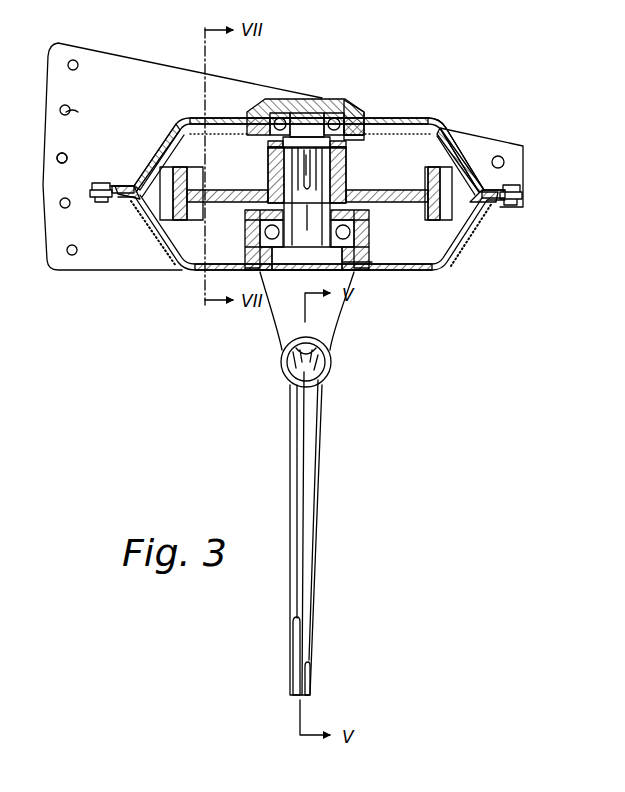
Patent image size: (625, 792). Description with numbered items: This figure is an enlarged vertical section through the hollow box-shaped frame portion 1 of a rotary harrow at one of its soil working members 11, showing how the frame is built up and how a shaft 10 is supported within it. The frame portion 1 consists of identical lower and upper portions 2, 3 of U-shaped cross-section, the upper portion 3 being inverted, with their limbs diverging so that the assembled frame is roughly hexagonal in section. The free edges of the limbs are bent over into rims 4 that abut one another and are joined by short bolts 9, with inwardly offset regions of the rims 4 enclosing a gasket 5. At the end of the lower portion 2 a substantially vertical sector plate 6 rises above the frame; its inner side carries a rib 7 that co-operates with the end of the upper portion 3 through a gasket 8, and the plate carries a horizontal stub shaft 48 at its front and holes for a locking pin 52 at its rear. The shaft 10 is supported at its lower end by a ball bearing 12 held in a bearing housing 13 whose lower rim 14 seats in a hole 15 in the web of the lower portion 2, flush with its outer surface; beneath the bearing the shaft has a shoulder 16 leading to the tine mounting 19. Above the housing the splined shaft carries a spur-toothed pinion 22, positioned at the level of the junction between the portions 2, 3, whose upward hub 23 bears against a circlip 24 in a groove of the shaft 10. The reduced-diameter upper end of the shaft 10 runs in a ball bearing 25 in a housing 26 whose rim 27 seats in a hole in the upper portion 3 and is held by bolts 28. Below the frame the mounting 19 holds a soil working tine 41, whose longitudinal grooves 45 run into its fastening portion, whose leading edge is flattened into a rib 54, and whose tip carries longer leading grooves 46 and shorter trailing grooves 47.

The hollow box-shaped frame portion 1 is at (433, 118).
The lower portion 2 is at (430, 275).
The upper portion 3 is at (178, 124).
The rims 4 is at (118, 185).
The gasket 5 is at (128, 205).
The sector plates 6 is at (135, 62).
The rib 7 is at (450, 140).
The gasket 8 is at (446, 126).
The short bolts 9 is at (100, 182).
The shaft 10 is at (302, 110).
The soil working member 11 is at (326, 378).
The ball bearing 12 is at (364, 236).
The bearing housing 13 is at (248, 232).
The lower rim 14 is at (357, 272).
The hole 15 is at (345, 275).
The shoulder 16 is at (365, 262).
The tine mounting 19 is at (278, 326).
The pinion 22 is at (396, 178).
The hub 23 is at (270, 145).
The circlip 24 is at (272, 152).
The ball bearing 25 is at (348, 101).
The housing 26 is at (310, 98).
The rim 27 is at (362, 138).
The bolts 28 is at (250, 110).
The soil working tine 41 is at (288, 468).
The grooves 45 is at (300, 360).
The leading hollow recesses or grooves 46 is at (290, 650).
The trailing hollow recesses or grooves 47 is at (308, 676).
The stub shaft 48 is at (498, 156).
The locking pin 52 is at (68, 155).
The rib 54 is at (292, 610).